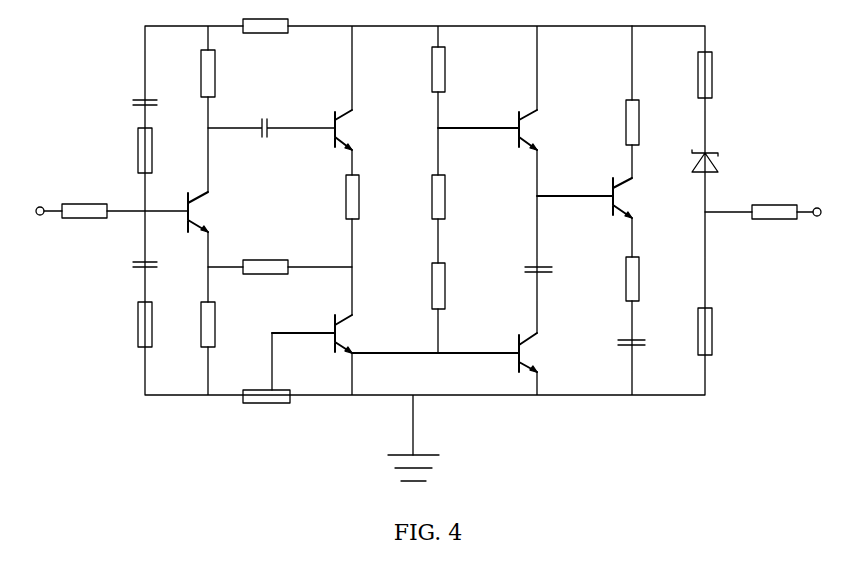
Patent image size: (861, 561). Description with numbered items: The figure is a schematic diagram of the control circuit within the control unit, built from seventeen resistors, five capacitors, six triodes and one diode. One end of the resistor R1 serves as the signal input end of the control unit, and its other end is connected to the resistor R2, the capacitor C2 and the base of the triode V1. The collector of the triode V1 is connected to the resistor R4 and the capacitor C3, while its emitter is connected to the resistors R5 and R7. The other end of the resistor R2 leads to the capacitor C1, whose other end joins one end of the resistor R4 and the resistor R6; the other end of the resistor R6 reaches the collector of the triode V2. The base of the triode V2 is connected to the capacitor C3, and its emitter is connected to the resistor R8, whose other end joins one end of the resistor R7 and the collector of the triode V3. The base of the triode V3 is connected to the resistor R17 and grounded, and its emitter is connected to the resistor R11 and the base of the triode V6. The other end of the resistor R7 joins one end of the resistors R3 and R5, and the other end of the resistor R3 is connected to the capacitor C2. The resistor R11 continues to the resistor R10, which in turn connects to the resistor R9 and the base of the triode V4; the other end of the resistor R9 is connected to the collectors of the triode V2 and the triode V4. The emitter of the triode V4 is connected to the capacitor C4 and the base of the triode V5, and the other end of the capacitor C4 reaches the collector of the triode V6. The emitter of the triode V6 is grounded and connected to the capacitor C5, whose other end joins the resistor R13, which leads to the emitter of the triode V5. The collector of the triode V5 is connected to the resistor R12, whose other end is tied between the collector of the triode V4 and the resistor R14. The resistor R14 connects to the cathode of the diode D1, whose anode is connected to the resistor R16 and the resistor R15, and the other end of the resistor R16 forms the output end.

The resistor R1 is at (84, 204).
The resistor R2 is at (131, 150).
The resistor R3 is at (131, 324).
The resistor R4 is at (194, 73).
The resistor R5 is at (194, 324).
The resistor R6 is at (265, 39).
The resistor R7 is at (280, 257).
The resistor R8 is at (338, 197).
The resistor R9 is at (423, 69).
The resistor R10 is at (420, 197).
The resistor R11 is at (421, 286).
The resistor R12 is at (613, 85).
The resistor R13 is at (612, 279).
The resistor R14 is at (722, 75).
The resistor R15 is at (722, 331).
The resistor R16 is at (774, 203).
The resistor R17 is at (266, 380).
The capacitor C1 is at (134, 102).
The capacitor C2 is at (130, 267).
The capacitor C3 is at (271, 117).
The capacitor C4 is at (524, 270).
The capacitor C5 is at (618, 347).
The diode D1 is at (718, 160).
The triode V1 is at (184, 212).
The triode V2 is at (328, 130).
The triode V3 is at (312, 333).
The triode V4 is at (487, 130).
The triode V5 is at (584, 198).
The triode V6 is at (444, 352).